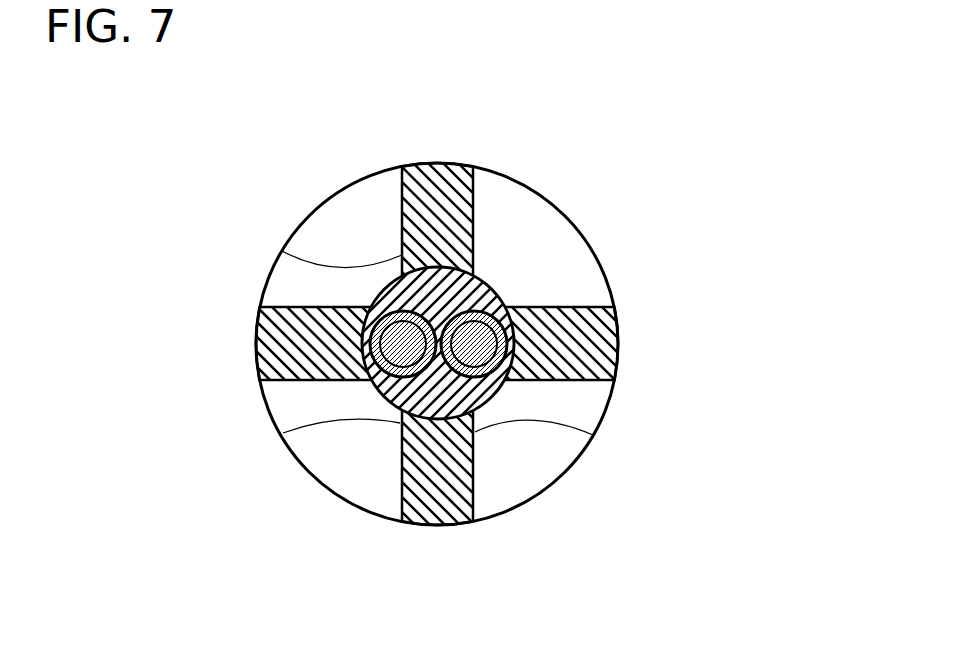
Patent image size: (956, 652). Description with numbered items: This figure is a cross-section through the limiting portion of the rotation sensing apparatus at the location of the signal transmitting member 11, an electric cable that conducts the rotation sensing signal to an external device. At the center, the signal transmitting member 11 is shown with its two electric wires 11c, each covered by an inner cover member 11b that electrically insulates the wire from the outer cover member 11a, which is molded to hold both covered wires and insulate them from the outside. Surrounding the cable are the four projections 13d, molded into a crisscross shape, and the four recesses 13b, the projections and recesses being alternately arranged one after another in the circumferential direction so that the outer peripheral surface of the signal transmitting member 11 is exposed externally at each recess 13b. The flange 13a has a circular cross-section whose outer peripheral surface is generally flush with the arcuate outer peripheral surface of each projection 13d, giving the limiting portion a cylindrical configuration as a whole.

The signal transmitting member 11 is at (569, 338).
The cover member 11a is at (475, 258).
The cover member 11b is at (470, 300).
The electric wire 11c is at (490, 368).
The flange 13a is at (340, 237).
The recess 13b is at (320, 303).
The projection 13d is at (317, 343).